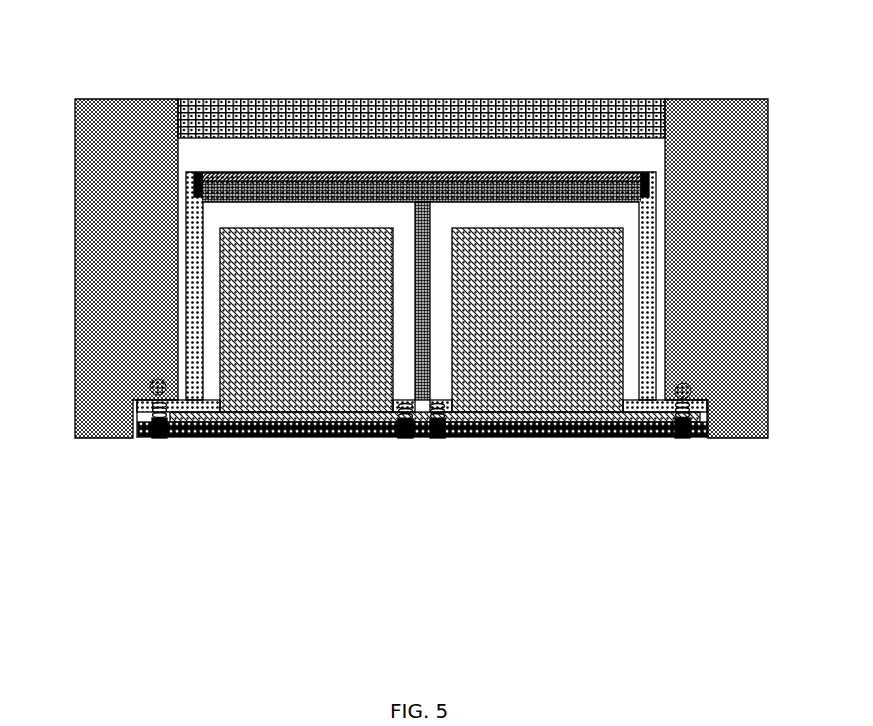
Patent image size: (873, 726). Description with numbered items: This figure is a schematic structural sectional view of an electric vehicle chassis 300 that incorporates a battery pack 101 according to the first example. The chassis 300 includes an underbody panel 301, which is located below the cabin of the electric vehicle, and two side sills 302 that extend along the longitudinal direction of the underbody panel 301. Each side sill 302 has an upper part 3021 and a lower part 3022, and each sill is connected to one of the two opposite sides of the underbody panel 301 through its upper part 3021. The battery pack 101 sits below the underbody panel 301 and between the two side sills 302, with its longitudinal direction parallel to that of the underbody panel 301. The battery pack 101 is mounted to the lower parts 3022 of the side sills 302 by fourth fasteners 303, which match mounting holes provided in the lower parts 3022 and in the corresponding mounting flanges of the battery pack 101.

The electric vehicle chassis 300 is at (150, 28).
The underbody panel 301 is at (373, 115).
The side sill 302 is at (431, 239).
The upper part 3021 is at (100, 172).
The lower part 3022 is at (75, 318).
The fourth fastener 303 is at (187, 438).
The battery pack 101 is at (502, 425).